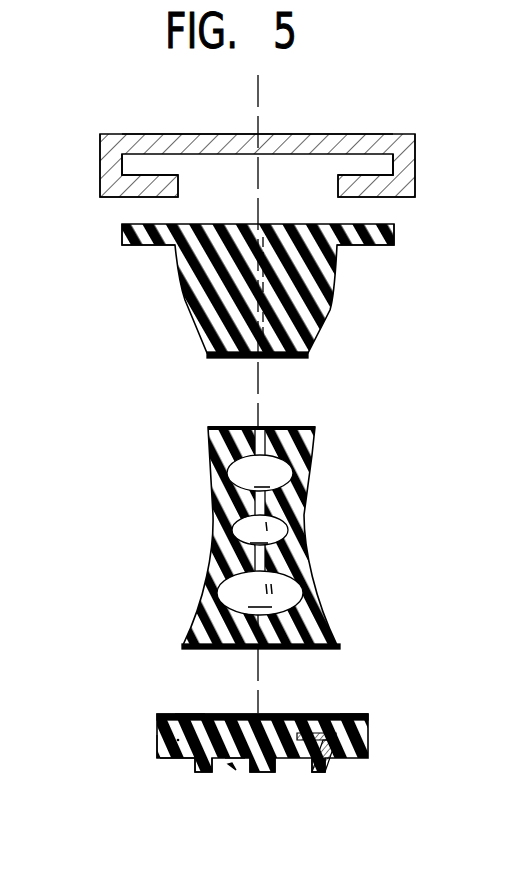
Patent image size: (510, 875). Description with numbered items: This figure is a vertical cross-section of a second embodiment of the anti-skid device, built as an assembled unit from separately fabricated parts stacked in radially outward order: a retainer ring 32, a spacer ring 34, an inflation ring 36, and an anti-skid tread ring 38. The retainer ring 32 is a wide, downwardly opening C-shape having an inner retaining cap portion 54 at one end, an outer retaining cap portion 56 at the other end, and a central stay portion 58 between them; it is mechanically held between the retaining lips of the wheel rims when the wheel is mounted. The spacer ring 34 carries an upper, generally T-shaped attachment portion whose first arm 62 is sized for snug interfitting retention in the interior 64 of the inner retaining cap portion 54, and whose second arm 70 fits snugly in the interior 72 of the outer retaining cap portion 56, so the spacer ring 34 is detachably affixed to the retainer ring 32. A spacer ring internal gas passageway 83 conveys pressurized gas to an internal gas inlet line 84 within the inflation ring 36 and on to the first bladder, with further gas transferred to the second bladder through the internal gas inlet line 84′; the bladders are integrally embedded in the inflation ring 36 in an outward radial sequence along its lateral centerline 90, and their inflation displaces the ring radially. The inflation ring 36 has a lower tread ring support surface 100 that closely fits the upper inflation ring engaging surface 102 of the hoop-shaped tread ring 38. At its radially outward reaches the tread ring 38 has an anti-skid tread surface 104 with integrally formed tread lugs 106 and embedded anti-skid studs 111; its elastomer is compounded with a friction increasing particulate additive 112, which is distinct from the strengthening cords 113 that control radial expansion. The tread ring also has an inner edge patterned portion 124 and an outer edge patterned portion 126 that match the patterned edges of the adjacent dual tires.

The retainer ring 32 is at (259, 127).
The spacer ring 34 is at (260, 282).
The inflation ring 36 is at (259, 559).
The anti-skid tread ring 38 is at (274, 759).
The inner retaining cap portion 54 is at (417, 167).
The outer retaining cap portion 56 is at (100, 168).
The central stay portion 58 is at (290, 140).
The first arm 62 is at (395, 228).
The interior of inner retaining cap portion 64 is at (380, 165).
The second arm 70 is at (122, 228).
The interior of outer retaining cap portion 72 is at (136, 157).
The spacer ring internal gas passageway 83 is at (248, 282).
The internal gas inlet line 84 is at (212, 433).
The internal gas inlet line 84′ is at (359, 476).
The lateral centerline 90 is at (258, 403).
The tread ring support surface 100 is at (298, 648).
The inflation ring engaging surface 102 is at (190, 714).
The anti-skid tread surface 104 is at (176, 760).
The tread lugs 106 is at (262, 772).
The anti-skid studs 111 is at (204, 773).
The friction increasing particulate additive 112 is at (231, 768).
The strengthening cords 113 is at (355, 714).
The inner edge patterned portion 124 is at (370, 740).
The outer edge patterned portion 126 is at (157, 752).